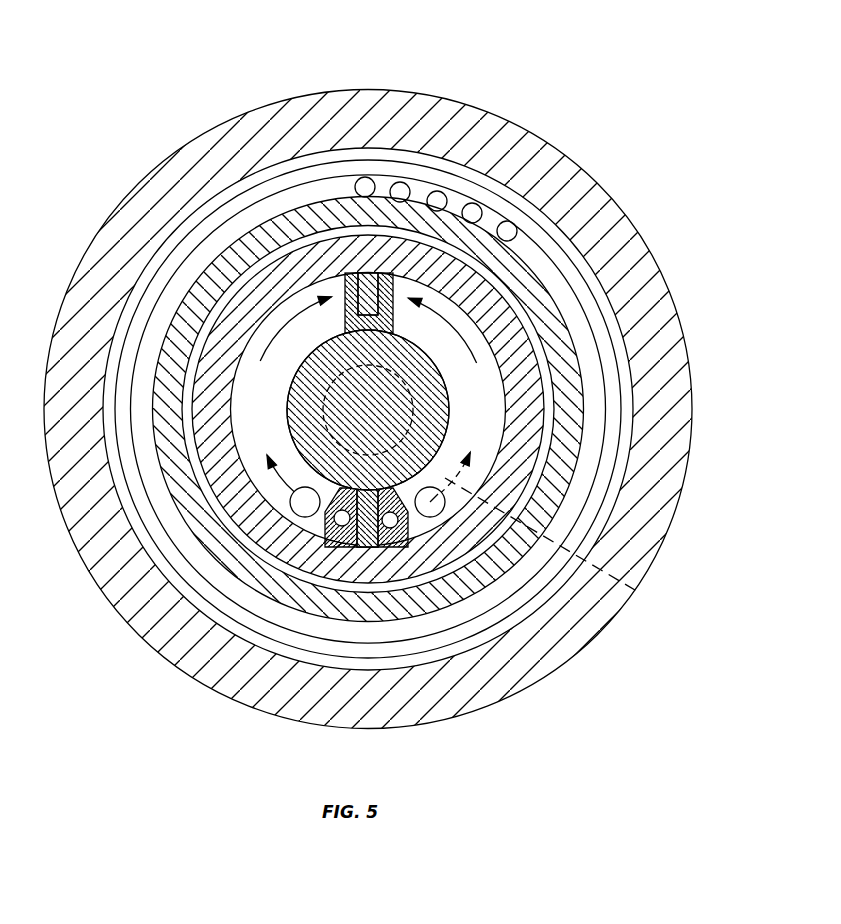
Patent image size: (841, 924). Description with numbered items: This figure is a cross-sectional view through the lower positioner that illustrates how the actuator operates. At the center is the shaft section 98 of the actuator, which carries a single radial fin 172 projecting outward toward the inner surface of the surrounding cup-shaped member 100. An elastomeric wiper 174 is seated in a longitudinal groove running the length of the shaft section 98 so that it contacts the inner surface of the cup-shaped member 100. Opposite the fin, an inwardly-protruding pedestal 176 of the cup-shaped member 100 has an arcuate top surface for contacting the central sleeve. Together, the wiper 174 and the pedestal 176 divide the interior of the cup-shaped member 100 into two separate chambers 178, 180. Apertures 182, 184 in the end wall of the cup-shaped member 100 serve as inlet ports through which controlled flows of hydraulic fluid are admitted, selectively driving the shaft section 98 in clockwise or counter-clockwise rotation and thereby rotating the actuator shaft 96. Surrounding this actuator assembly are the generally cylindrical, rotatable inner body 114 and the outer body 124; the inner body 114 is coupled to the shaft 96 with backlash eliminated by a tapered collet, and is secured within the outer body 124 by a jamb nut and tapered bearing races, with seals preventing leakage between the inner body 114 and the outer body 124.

The actuator shaft 96 is at (645, 593).
The shaft section 98 is at (460, 389).
The cup-shaped member 100 is at (483, 298).
The inner body 114 is at (515, 267).
The outer body 124 is at (377, 112).
The radial fin 172 is at (343, 278).
The elastomeric wiper 174 is at (378, 302).
The pedestal 176 is at (377, 548).
The chamber 178 is at (268, 416).
The chamber 180 is at (496, 431).
The aperture 182 is at (305, 502).
The aperture 184 is at (430, 517).